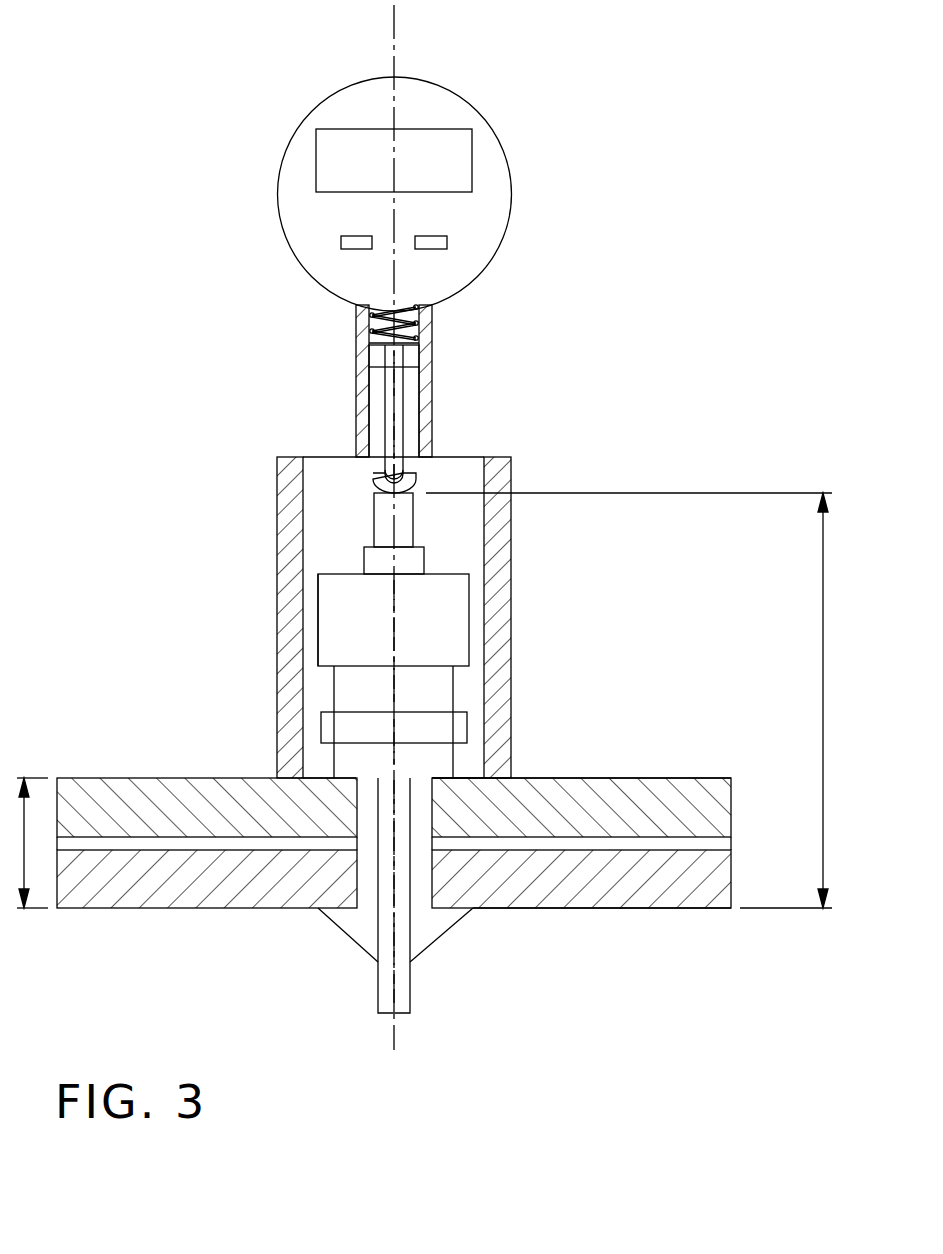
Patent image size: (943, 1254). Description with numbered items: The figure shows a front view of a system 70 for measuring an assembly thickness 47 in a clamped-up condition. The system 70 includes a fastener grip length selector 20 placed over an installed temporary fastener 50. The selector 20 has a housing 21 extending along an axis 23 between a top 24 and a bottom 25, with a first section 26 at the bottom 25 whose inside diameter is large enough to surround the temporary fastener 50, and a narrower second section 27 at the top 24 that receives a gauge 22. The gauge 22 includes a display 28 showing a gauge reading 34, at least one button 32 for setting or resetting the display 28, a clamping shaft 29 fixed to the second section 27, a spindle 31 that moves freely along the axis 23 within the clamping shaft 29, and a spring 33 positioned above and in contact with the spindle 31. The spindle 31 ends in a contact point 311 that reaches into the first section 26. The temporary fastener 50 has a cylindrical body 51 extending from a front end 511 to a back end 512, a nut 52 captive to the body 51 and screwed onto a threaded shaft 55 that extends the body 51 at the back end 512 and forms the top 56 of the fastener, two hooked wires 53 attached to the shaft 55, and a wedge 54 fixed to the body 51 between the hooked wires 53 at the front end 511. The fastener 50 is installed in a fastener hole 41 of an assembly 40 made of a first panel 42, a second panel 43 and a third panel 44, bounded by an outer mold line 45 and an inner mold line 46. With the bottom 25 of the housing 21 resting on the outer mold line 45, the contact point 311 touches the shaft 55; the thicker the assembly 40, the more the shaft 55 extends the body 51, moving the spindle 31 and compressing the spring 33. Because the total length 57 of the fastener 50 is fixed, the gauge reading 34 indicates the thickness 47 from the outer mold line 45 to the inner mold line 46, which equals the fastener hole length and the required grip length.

The system 70 is at (141, 62).
The axis 23 is at (394, 30).
The fastener grip length selector 20 is at (455, 443).
The gauge 22 is at (395, 194).
The display 28 is at (458, 146).
The gauge reading 34 is at (330, 160).
The button 32 is at (362, 249).
The top 24 is at (362, 300).
The spring 33 is at (376, 319).
The clamping shaft 29 is at (376, 352).
The spindle 31 is at (391, 396).
The second section 27 is at (376, 426).
The contact point 311 is at (368, 481).
The first section 26 is at (312, 497).
The housing 21 is at (339, 503).
The top of the temporary fastener 56 is at (416, 492).
The threaded shaft 55 is at (403, 531).
The nut 52 is at (414, 565).
The temporary fastener 50 is at (452, 598).
The back end 512 is at (338, 575).
The body 51 is at (445, 688).
The front end 511 is at (450, 790).
The hooked wires 53 is at (427, 922).
The wedge 54 is at (405, 1001).
The bottom 25 is at (320, 780).
The total length 57 is at (823, 612).
The assembly 40 is at (597, 912).
The fastener hole 41 is at (352, 872).
The first panel 42 is at (720, 802).
The second panel 43 is at (722, 843).
The third panel 44 is at (722, 864).
The outer mold line 45 is at (656, 778).
The inner mold line 46 is at (660, 910).
The thickness 47 is at (24, 820).